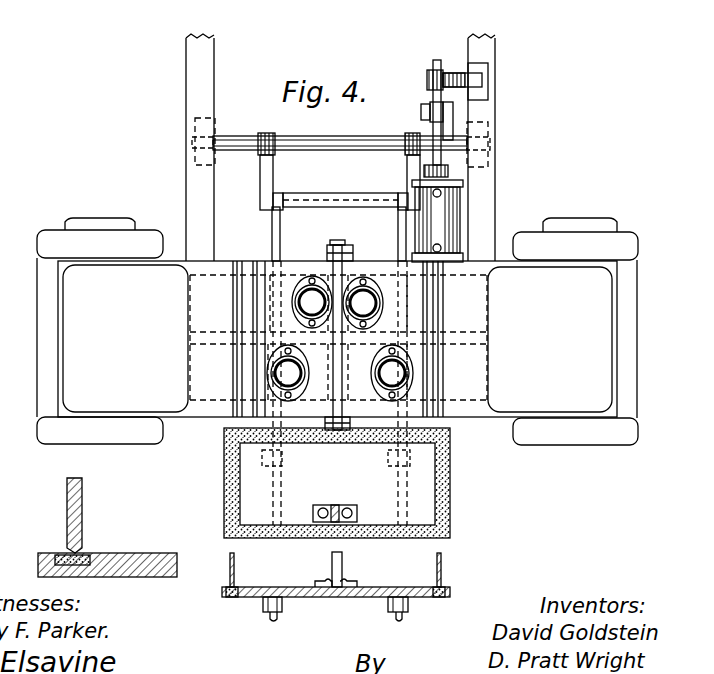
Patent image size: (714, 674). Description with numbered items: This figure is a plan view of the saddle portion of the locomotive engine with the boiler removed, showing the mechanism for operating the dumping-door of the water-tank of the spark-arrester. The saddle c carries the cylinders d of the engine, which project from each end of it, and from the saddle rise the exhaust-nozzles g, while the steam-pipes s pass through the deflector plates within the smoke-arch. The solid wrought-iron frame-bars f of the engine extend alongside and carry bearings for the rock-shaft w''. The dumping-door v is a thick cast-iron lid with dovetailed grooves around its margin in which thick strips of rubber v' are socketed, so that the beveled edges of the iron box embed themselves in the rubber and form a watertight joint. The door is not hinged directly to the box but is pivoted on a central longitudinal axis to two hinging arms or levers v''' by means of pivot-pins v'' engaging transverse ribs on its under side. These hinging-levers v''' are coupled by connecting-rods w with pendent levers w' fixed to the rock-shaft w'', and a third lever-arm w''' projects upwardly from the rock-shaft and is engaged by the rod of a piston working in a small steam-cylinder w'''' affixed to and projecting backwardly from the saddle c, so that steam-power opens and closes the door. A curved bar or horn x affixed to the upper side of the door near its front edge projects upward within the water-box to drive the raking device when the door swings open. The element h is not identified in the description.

The frame-bars f is at (340, 147).
The cylinders d is at (339, 331).
The saddle c is at (337, 339).
The exhaust-nozzles g is at (337, 302).
The steam-pipes s is at (340, 373).
The connecting-rods w is at (336, 366).
The pendent levers w' is at (339, 171).
The rock-shaft w'' is at (340, 153).
The third lever-arm w''' is at (476, 118).
The steam-cylinder w'''' is at (437, 221).
The dumping-door v is at (244, 524).
The rubber strips v' is at (267, 530).
The pivot-pins v'' is at (351, 606).
The hinging arms or levers v''' is at (357, 625).
The curved bar or horn x is at (338, 505).
The thin posts h is at (238, 565).